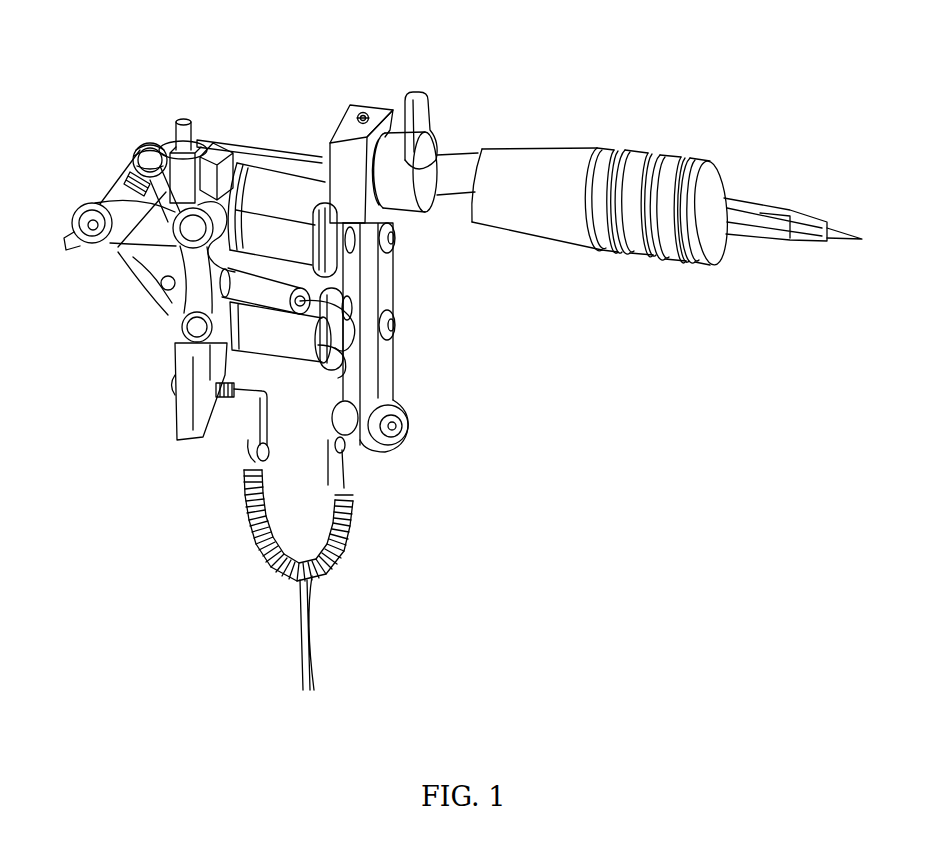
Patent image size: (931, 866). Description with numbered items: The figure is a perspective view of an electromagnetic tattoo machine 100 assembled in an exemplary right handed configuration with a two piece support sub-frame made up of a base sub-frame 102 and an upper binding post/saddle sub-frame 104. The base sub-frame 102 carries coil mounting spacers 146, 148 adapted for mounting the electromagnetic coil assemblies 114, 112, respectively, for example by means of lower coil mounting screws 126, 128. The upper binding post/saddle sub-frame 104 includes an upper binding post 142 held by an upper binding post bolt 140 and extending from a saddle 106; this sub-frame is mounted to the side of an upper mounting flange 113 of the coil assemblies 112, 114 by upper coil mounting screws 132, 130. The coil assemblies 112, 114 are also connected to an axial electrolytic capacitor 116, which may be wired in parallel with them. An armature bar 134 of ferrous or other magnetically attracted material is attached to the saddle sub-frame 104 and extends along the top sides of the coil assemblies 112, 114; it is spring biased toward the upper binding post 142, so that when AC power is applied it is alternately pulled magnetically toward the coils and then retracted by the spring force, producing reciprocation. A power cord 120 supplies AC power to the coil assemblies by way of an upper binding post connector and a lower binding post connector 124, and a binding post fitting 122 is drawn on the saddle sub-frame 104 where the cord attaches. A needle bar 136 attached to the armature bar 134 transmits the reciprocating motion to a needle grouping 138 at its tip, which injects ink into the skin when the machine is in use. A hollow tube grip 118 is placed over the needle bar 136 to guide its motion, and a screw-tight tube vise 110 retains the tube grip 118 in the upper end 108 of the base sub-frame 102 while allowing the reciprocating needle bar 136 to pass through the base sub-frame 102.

The electromagnetic tattoo machine 100 is at (532, 534).
The base sub-frame 102 is at (382, 360).
The upper binding post/saddle sub-frame 104 is at (180, 408).
The saddle 106 is at (134, 222).
The upper end of the base sub-frame 108 is at (346, 110).
The screw-tight tube vise 110 is at (425, 93).
The electromagnetic coil assembly 112 is at (284, 197).
The upper mounting flange 113 is at (216, 160).
The electromagnetic coil assembly 114 is at (279, 336).
The axial electrolytic capacitor 116 is at (264, 291).
The tube grip 118 is at (535, 198).
The power cord 120 is at (354, 546).
The binding post screw 122 is at (222, 400).
The lower binding post connector 124 is at (353, 437).
The lower coil mounting screw 126 is at (398, 324).
The lower coil mounting screw 128 is at (398, 243).
The upper coil mounting screw 130 is at (190, 328).
The upper coil mounting screw 132 is at (170, 263).
The armature bar 134 is at (182, 117).
The needle bar 136 is at (275, 142).
The needle grouping 138 is at (848, 220).
The upper binding post bolt 140 is at (87, 226).
The upper binding post 142 is at (128, 172).
The coil mounting spacer 146 is at (364, 307).
The coil mounting spacer 148 is at (355, 243).